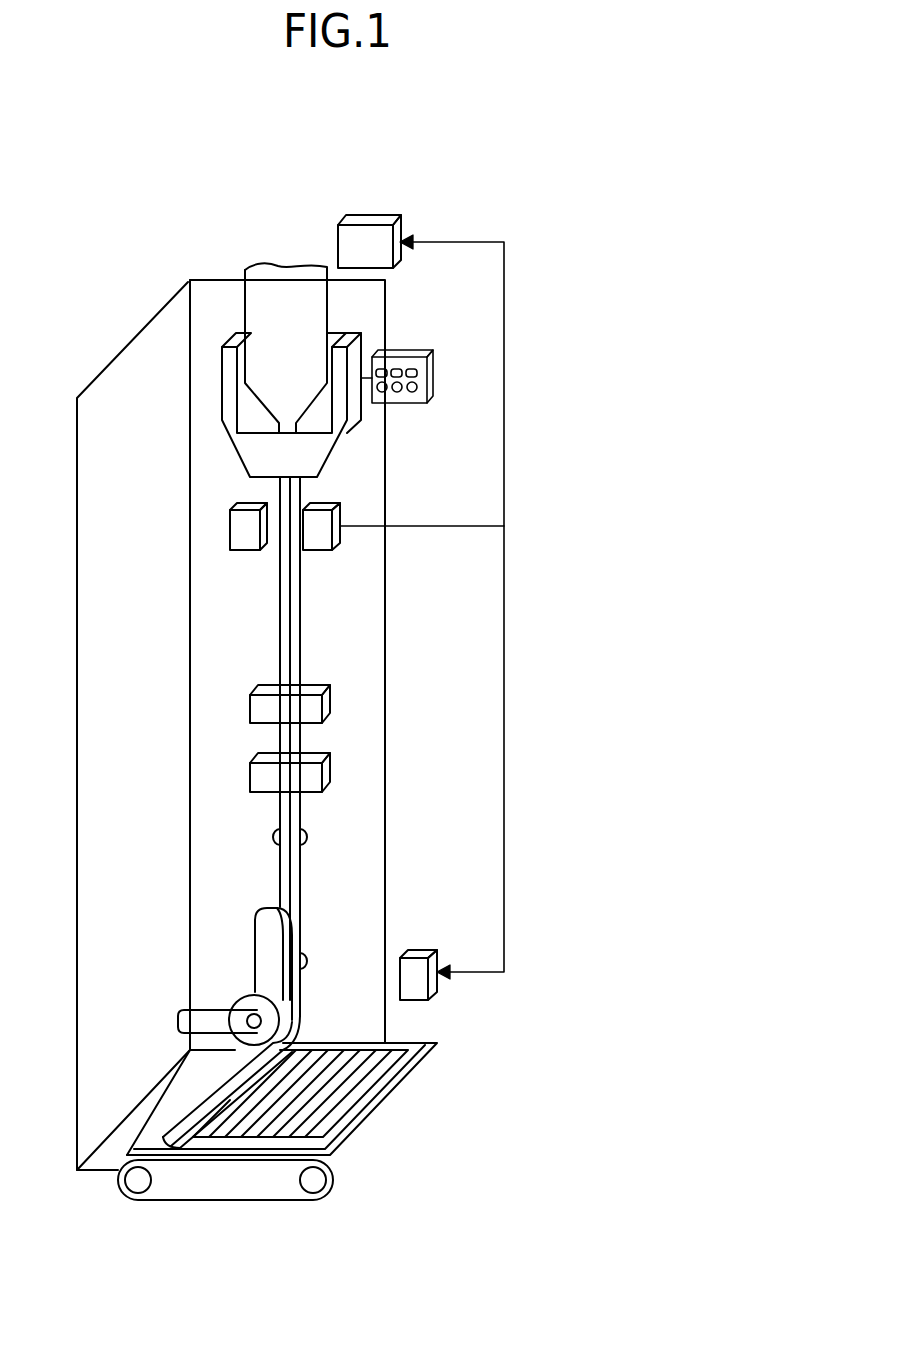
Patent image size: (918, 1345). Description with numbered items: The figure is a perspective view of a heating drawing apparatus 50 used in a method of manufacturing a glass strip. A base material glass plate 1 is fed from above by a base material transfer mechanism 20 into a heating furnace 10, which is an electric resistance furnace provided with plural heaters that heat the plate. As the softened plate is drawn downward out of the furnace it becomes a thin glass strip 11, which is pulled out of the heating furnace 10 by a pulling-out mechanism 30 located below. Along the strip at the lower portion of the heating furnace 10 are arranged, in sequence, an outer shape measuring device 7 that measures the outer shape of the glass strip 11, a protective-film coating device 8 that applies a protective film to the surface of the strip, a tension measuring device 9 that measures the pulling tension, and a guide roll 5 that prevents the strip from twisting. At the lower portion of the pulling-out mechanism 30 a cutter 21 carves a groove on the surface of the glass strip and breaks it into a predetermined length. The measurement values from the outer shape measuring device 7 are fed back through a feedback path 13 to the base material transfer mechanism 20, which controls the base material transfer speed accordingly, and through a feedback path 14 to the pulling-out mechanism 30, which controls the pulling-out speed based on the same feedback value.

The heating drawing apparatus 50 is at (408, 156).
The base material transfer mechanism 20 is at (397, 214).
The base material glass plate 1 is at (330, 294).
The heating furnace 10 is at (363, 340).
The feedback path 13 is at (505, 490).
The outer shape measuring device 7 is at (243, 550).
The glass strip 11 is at (300, 580).
The protective-film coating device 8 is at (330, 695).
The tension measuring device 9 is at (330, 763).
The feedback path 14 is at (505, 745).
The guide roll 5 is at (310, 832).
The cutter 21 is at (238, 995).
The pulling-out mechanism 30 is at (312, 960).